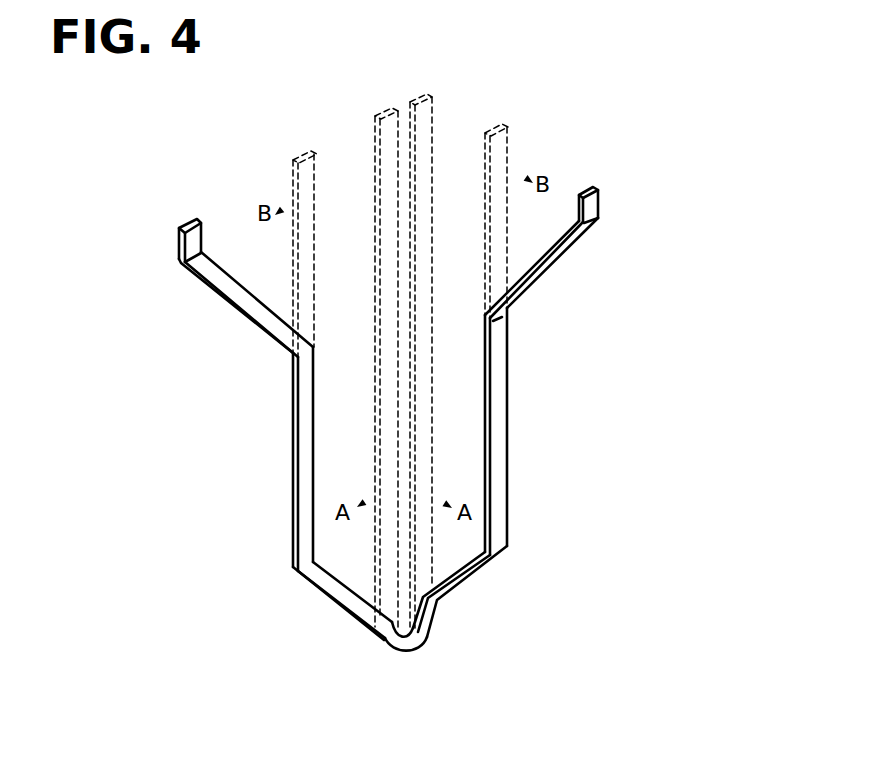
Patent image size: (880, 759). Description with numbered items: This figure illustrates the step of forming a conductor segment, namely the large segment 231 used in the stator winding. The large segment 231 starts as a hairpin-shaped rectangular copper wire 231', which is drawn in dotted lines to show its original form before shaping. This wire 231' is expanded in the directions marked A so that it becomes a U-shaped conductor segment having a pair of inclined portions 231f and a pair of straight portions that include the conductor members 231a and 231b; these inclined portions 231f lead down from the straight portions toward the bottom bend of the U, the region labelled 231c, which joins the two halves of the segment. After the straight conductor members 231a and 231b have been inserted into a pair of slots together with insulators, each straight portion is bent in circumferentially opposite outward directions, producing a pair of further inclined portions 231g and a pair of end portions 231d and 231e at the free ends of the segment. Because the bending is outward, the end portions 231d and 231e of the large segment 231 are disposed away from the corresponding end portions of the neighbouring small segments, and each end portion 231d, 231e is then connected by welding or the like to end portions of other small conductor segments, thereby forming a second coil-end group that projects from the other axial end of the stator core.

The large segment 231 is at (483, 401).
The hairpin-shaped rectangular copper wire 231' is at (436, 315).
The conductor member 231a is at (307, 470).
The conductor member 231b is at (502, 425).
The bottom bent portion 231c is at (420, 638).
The end portion 231d is at (195, 237).
The end portion 231e is at (595, 203).
The inclined portions 231f is at (335, 588).
The inclined portions 231g is at (228, 287).